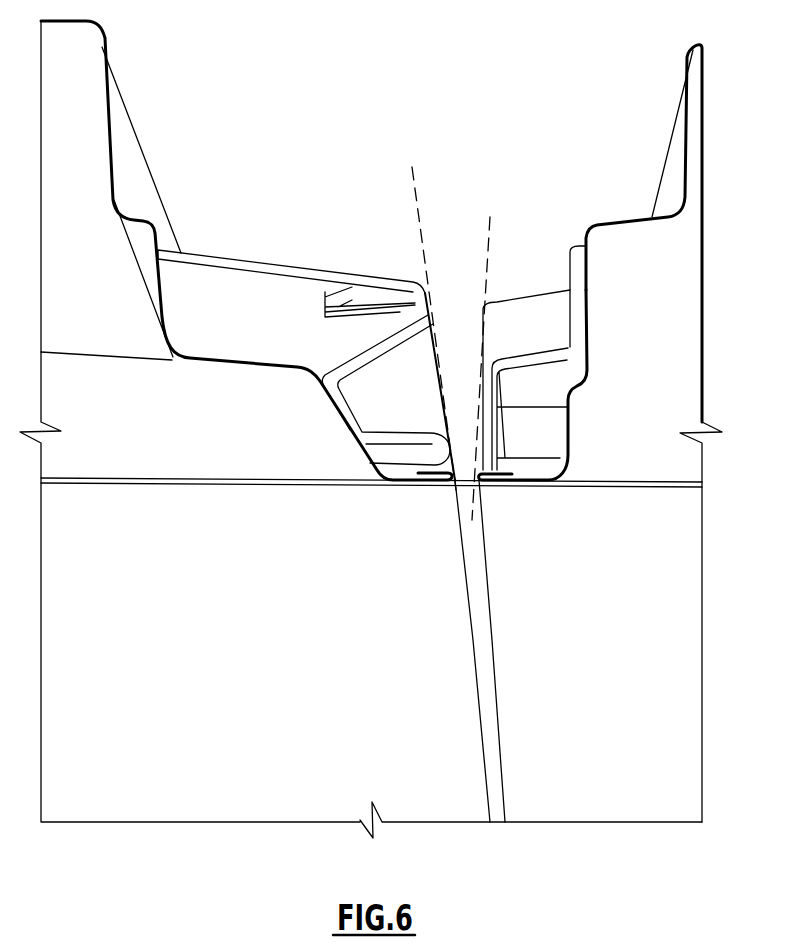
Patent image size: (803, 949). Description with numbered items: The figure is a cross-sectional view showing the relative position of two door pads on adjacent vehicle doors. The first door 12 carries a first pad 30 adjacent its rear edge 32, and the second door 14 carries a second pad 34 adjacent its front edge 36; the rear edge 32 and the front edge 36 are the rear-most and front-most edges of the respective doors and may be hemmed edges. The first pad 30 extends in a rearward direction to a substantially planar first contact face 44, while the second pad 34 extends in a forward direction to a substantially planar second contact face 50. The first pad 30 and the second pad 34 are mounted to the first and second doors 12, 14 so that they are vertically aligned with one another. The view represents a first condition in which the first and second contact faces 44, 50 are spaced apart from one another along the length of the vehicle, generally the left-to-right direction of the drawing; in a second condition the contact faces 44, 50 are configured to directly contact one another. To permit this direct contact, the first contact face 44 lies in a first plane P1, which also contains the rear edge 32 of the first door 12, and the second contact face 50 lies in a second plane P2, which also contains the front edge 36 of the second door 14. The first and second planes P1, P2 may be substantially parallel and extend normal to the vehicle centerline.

The first door 12 is at (657, 803).
The second door 14 is at (273, 800).
The first pad 30 is at (533, 278).
The rear edge 32 is at (500, 750).
The second pad 34 is at (329, 256).
The front edge 36 is at (478, 694).
The first contact face 44 is at (480, 388).
The second contact face 50 is at (432, 305).
The first plane P1 is at (486, 222).
The second plane P2 is at (410, 162).